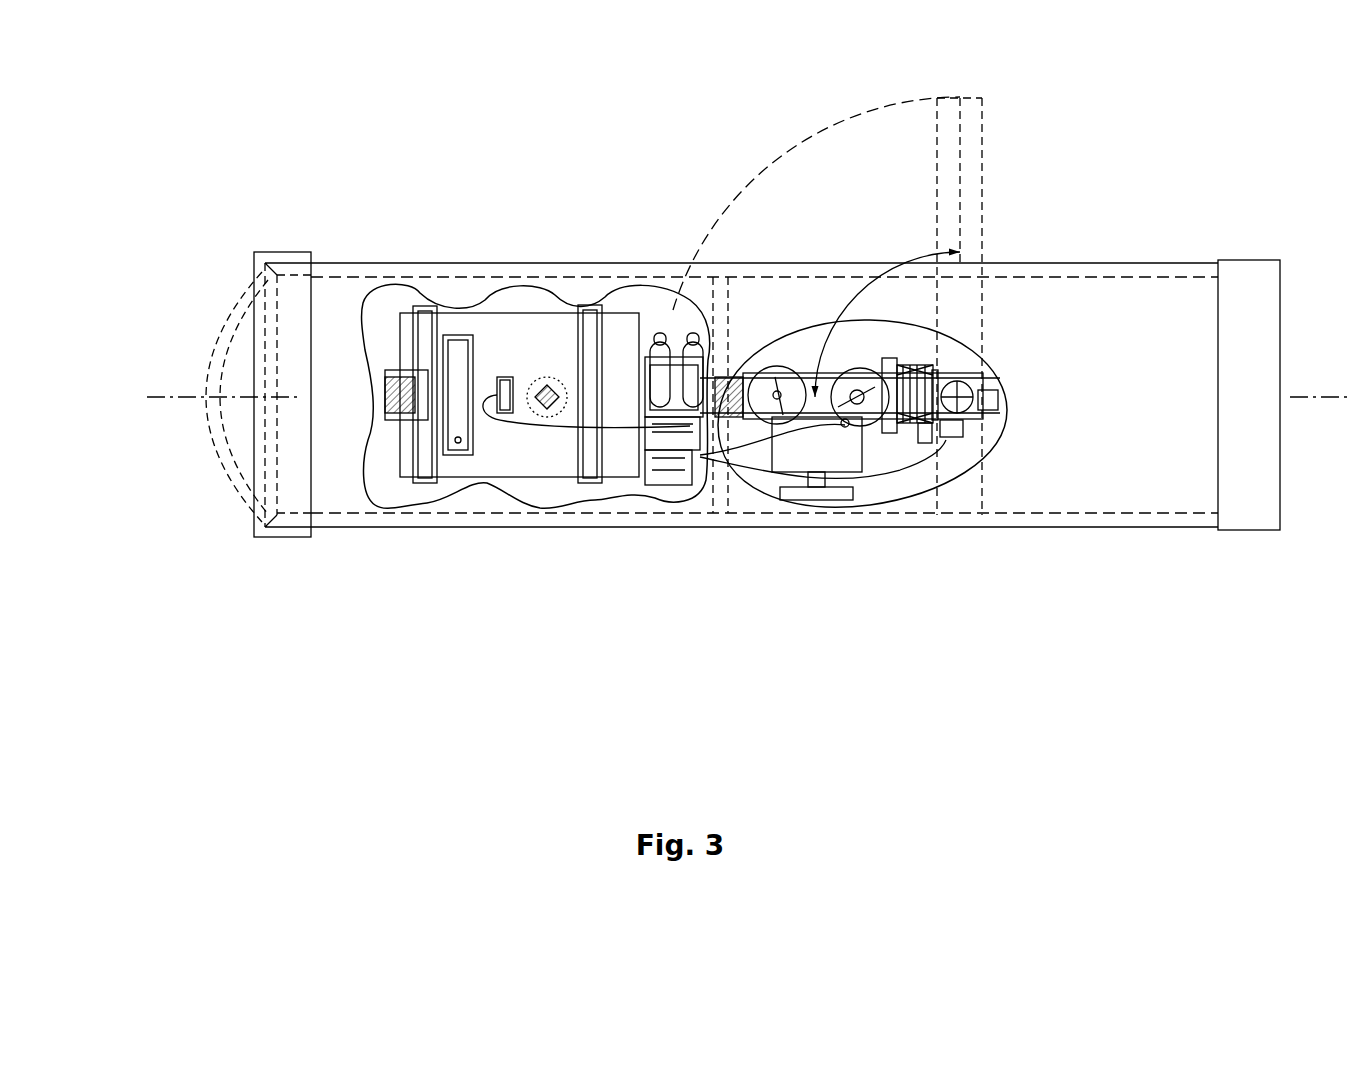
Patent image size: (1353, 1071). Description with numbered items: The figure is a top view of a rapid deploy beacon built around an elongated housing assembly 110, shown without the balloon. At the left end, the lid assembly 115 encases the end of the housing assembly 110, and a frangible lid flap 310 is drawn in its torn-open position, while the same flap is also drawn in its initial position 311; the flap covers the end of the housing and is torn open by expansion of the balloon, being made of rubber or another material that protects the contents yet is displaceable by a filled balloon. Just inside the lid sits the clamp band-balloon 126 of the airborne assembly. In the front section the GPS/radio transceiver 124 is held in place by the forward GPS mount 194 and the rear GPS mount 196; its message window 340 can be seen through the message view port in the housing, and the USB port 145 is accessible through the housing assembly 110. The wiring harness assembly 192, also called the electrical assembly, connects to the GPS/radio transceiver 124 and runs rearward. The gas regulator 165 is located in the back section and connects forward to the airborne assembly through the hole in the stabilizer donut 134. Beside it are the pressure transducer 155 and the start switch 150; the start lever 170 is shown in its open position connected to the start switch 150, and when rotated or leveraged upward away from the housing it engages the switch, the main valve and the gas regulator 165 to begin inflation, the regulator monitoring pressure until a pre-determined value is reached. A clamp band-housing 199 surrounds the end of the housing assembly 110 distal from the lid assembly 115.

The housing assembly 110 is at (1230, 223).
The lid assembly 115 is at (311, 253).
The GPS/radio transceiver 124 is at (520, 484).
The clamp band-balloon 126 is at (385, 427).
The stabilizer donut 134 is at (693, 333).
The USB port 145 is at (511, 418).
The start switch 150 is at (934, 444).
The pressure transducer 155 is at (848, 426).
The regulator 165 is at (777, 365).
The start lever 170 is at (983, 368).
The wiring harness assembly 192 is at (664, 479).
The forward GPS mount 194 is at (419, 484).
The rear GPS mount 196 is at (598, 305).
The clamp band-housing 199 is at (1250, 535).
The frangible lid flap 310 is at (208, 351).
The frangible lid flap initial position 311 is at (273, 450).
The message window 340 is at (472, 336).